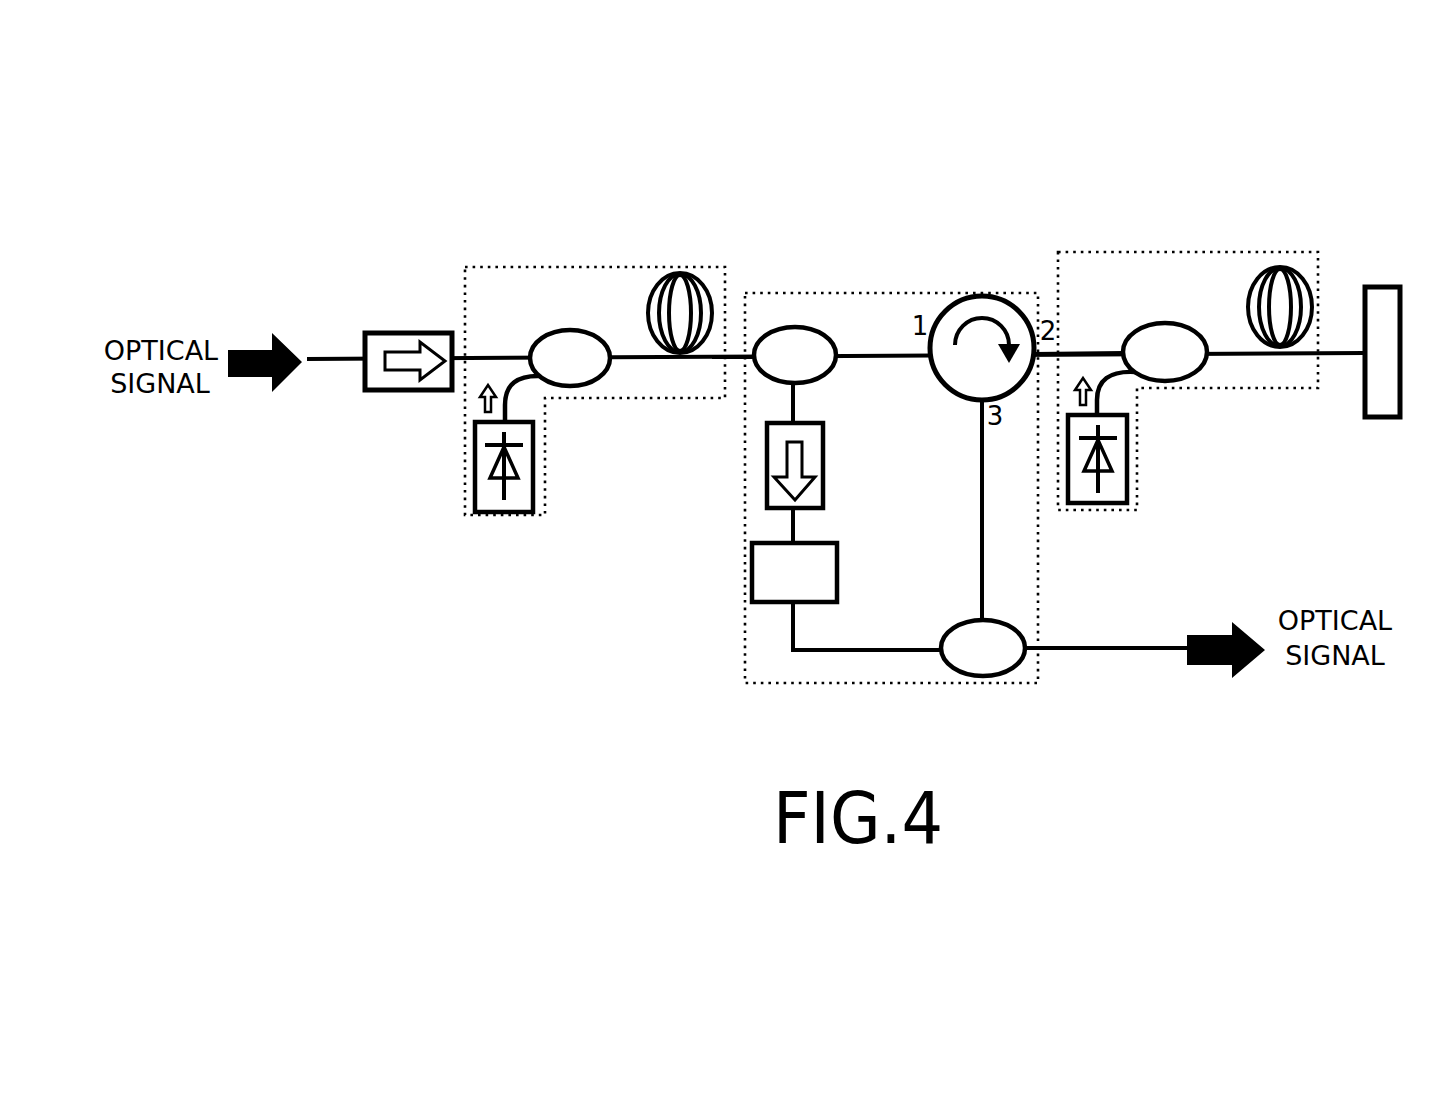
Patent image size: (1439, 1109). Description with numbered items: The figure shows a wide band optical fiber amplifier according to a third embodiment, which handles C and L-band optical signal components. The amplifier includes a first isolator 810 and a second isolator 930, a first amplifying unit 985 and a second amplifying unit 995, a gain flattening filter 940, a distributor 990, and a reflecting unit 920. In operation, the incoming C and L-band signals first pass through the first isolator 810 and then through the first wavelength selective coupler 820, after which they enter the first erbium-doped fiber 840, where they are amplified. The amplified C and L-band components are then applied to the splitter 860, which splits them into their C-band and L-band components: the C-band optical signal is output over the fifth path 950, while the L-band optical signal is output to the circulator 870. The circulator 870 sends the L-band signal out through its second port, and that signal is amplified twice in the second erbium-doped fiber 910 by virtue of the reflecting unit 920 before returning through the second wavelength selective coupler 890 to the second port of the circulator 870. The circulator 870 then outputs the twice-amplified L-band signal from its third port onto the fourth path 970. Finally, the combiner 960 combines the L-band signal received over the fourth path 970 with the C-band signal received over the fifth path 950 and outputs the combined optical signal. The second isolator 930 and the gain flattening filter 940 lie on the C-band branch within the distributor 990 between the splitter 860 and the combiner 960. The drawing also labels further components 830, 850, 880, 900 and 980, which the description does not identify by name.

The first isolator 810 is at (404, 333).
The first wavelength selective coupler 820 is at (562, 331).
The first photodetector 830 is at (535, 470).
The first erbium-doped fiber 840 is at (688, 278).
The optical fiber 850 is at (730, 362).
The splitter 860 is at (815, 327).
The circulator 870 is at (1008, 303).
The optical fiber 880 is at (1085, 350).
The second wavelength selective coupler 890 is at (1175, 324).
The second photodetector 900 is at (1130, 470).
The second erbium-doped fiber 910 is at (1300, 270).
The reflecting unit 920 is at (1383, 287).
The second isolator 930 is at (766, 503).
The gain flattening filter 940 is at (752, 578).
The fifth path 950 is at (793, 635).
The combiner 960 is at (963, 625).
The fourth path 970 is at (982, 470).
The output optical fiber 980 is at (1070, 647).
The first amplifying unit 985 is at (465, 455).
The distributor 990 is at (910, 293).
The second amplifying unit 995 is at (1265, 390).